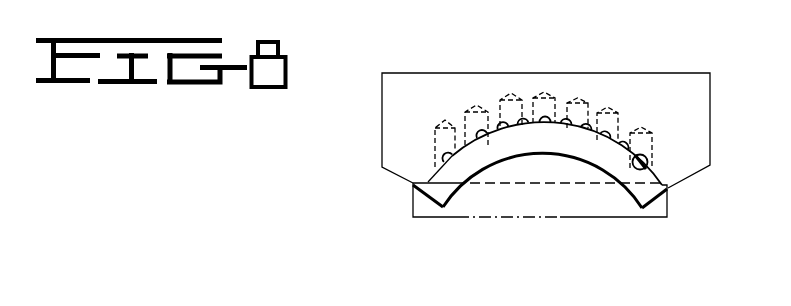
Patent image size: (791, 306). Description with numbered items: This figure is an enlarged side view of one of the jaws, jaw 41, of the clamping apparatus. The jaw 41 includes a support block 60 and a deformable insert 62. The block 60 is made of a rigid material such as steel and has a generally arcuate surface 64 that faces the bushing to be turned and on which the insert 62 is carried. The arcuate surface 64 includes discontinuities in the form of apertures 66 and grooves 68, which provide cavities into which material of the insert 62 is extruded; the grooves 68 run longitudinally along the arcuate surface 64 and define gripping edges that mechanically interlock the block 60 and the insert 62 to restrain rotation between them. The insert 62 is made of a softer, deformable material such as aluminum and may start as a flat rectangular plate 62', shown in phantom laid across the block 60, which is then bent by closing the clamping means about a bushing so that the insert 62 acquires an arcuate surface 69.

The jaw 41 is at (528, 58).
The support block 60 is at (460, 73).
The deformable insert 62 is at (540, 219).
The rectangular plate 62' is at (527, 252).
The arcuate surface 64 is at (646, 155).
The apertures 66 is at (589, 106).
The grooves 68 is at (461, 144).
The arcuate surface 69 is at (599, 160).